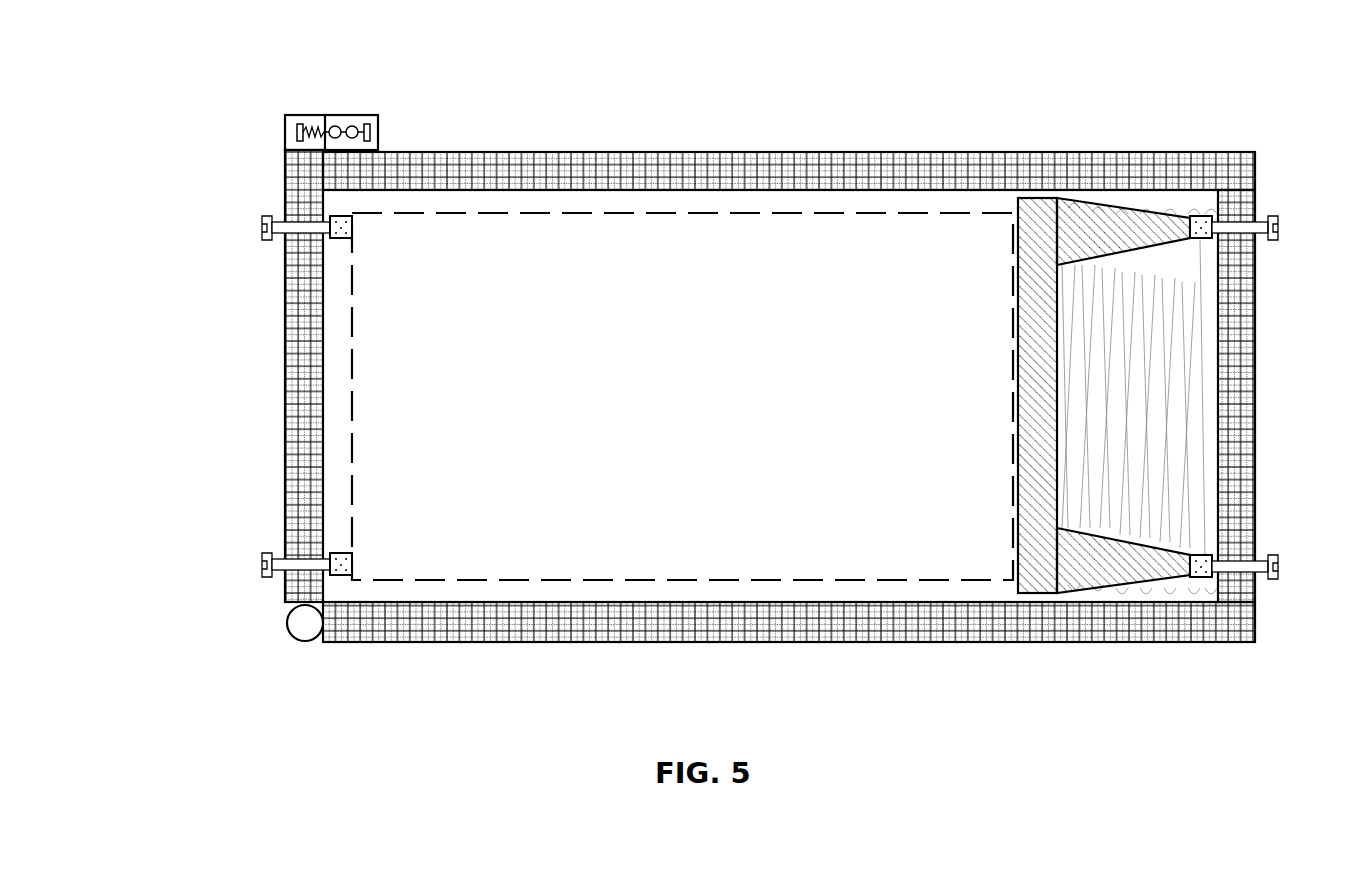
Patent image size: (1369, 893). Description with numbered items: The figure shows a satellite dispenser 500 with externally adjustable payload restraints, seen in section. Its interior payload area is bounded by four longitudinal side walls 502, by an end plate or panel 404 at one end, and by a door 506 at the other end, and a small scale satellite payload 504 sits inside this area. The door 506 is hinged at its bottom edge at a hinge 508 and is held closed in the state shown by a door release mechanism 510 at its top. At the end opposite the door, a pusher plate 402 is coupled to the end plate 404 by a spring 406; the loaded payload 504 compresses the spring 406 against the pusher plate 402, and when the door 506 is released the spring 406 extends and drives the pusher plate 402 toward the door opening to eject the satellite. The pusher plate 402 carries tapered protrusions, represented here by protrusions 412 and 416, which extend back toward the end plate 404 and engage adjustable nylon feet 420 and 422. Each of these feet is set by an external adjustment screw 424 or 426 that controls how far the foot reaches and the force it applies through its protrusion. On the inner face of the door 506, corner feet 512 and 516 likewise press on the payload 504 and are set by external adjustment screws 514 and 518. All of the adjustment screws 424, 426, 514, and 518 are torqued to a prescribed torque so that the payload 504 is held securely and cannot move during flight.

The satellite dispenser 500 is at (148, 70).
The longitudinal side walls 502 is at (690, 152).
The satellite payload 504 is at (682, 396).
The door 506 is at (285, 365).
The hinge 508 is at (288, 620).
The door release mechanism 510 is at (377, 110).
The foot 512 is at (352, 563).
The adjustment screw 514 is at (262, 560).
The foot 516 is at (352, 228).
The adjustment screw 518 is at (262, 222).
The pusher plate 402 is at (1030, 200).
The end plate 404 is at (1256, 380).
The spring 406 is at (1180, 212).
The protrusion 412 is at (1110, 218).
The protrusion 416 is at (1095, 572).
The foot 420 is at (1198, 216).
The foot 422 is at (1200, 577).
The adjustment screw 424 is at (1272, 225).
The adjustment screw 426 is at (1275, 605).